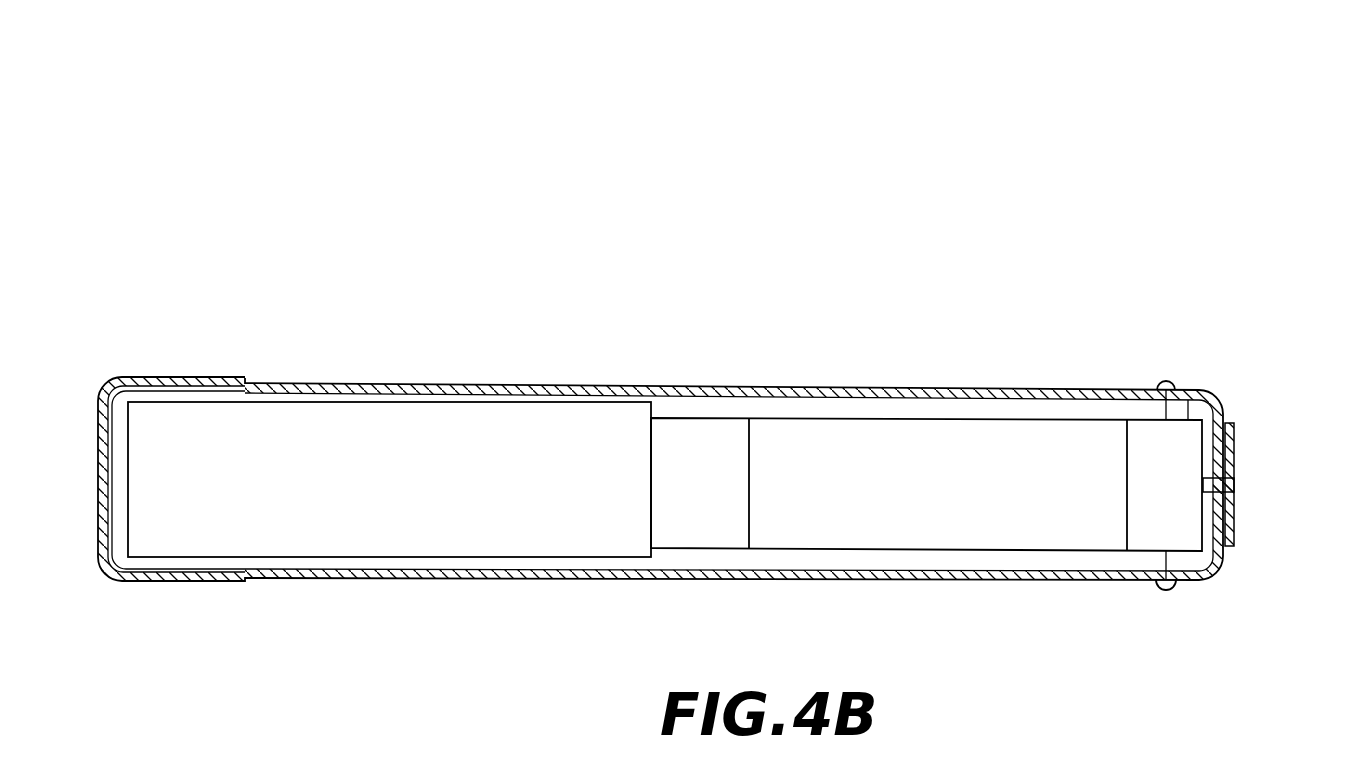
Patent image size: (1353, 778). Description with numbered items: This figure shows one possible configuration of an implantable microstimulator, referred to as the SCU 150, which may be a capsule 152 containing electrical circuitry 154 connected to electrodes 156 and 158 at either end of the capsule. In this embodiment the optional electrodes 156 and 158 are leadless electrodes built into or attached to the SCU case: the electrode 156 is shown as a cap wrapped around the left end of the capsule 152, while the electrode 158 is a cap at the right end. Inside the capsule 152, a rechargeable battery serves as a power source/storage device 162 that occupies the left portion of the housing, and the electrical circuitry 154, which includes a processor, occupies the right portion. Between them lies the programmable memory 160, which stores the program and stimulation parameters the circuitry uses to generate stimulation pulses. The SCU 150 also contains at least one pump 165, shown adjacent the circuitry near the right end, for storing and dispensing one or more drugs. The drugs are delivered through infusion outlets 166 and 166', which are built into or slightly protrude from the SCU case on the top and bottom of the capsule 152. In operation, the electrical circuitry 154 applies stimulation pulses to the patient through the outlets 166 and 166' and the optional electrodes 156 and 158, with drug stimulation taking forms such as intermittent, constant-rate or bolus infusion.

The SCU 150 is at (291, 191).
The capsule 152 is at (460, 385).
The electrical circuitry 154 is at (912, 530).
The electrode 156 is at (172, 378).
The electrode 158 is at (1237, 466).
The programmable memory 160 is at (712, 417).
The power source/storage device 162 is at (420, 522).
The pump 165 is at (1188, 413).
The infusion outlet 166 is at (1148, 363).
The infusion outlet 166' is at (1142, 613).